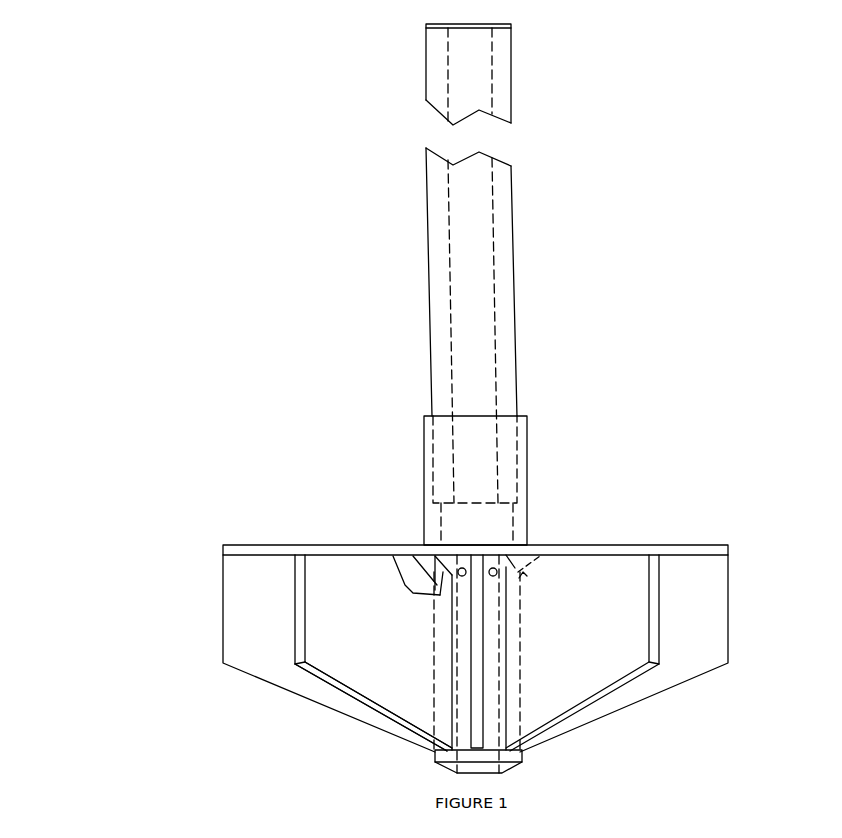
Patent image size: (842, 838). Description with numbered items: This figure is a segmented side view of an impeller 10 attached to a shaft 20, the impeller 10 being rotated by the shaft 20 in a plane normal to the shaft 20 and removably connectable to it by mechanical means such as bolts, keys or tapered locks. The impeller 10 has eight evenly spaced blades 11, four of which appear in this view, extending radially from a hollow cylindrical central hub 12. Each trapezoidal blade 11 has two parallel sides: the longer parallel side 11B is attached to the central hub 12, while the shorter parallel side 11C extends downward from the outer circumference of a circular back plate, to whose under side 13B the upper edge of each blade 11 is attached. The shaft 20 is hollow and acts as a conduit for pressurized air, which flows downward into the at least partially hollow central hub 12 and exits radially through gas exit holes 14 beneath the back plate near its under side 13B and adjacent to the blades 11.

The impeller 10 is at (103, 630).
The blades 11 is at (357, 638).
The longer parallel side 11B is at (452, 665).
The shorter parallel side 11C is at (729, 583).
The central hub 12 is at (492, 647).
The under side 13B is at (583, 557).
The gas exit holes 14 is at (497, 572).
The shaft 20 is at (418, 292).